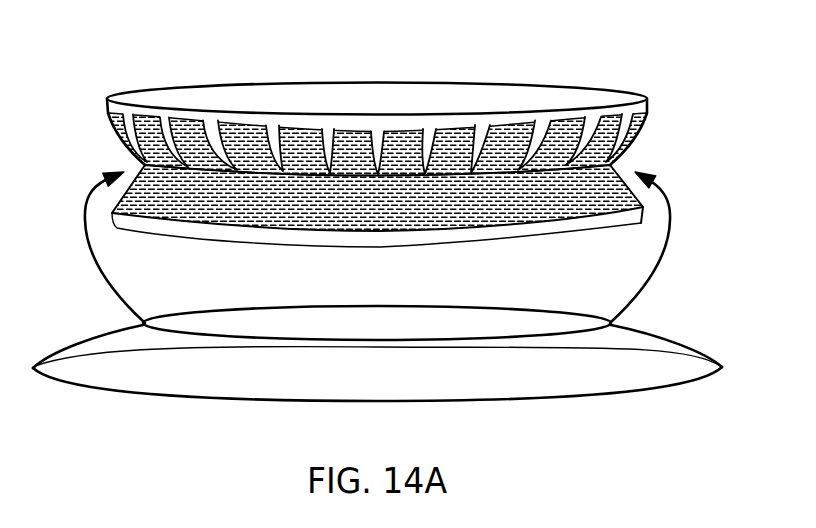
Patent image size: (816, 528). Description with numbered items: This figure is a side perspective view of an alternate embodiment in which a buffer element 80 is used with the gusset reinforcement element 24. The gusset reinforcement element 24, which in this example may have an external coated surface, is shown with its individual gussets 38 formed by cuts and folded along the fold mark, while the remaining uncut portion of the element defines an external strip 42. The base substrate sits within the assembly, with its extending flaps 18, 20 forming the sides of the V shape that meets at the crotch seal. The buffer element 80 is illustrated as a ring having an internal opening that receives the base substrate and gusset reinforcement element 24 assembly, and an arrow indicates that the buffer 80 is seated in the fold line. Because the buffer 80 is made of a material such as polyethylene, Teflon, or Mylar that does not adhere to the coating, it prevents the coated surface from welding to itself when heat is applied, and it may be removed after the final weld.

The extending flap 18 is at (427, 122).
The gussets 38 is at (559, 125).
The gusset reinforcement element 24 is at (657, 161).
The extending flap 20 is at (462, 237).
The external strip 42 is at (642, 224).
The buffer element 80 is at (653, 342).